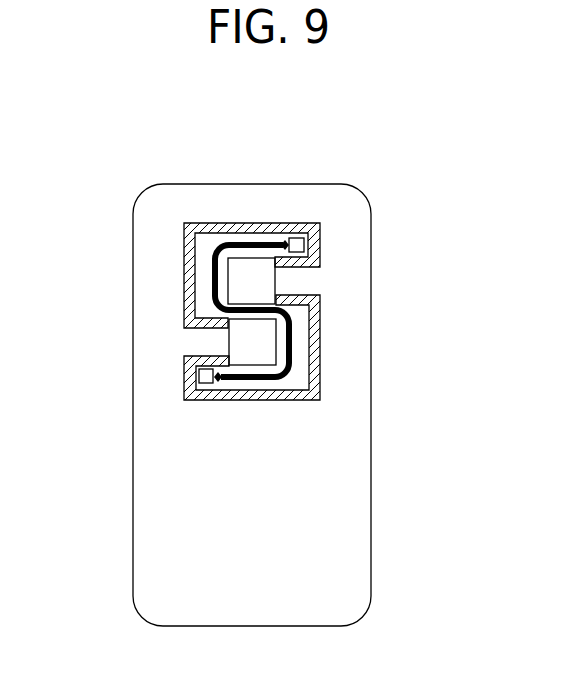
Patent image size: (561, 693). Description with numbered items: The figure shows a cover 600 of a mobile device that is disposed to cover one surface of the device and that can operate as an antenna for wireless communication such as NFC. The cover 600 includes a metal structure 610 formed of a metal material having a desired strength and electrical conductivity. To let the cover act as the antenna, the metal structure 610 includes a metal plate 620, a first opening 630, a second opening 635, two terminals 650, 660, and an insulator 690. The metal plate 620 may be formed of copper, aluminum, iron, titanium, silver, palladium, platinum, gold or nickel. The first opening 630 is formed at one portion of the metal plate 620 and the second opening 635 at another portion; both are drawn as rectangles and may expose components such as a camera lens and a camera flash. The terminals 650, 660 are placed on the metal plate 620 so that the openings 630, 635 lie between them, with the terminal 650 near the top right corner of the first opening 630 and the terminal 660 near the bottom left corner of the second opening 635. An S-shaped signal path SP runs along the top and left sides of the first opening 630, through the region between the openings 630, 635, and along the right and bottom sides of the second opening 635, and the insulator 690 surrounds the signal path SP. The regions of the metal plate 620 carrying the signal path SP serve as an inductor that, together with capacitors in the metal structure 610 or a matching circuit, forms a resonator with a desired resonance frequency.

The cover 600 is at (272, 125).
The metal structure 610 is at (369, 192).
The metal plate 620 is at (132, 336).
The first opening 630 is at (260, 280).
The second opening 635 is at (258, 338).
The terminal 650 is at (295, 236).
The terminal 660 is at (198, 374).
The insulator 690 is at (183, 282).
The signal path SP is at (250, 380).